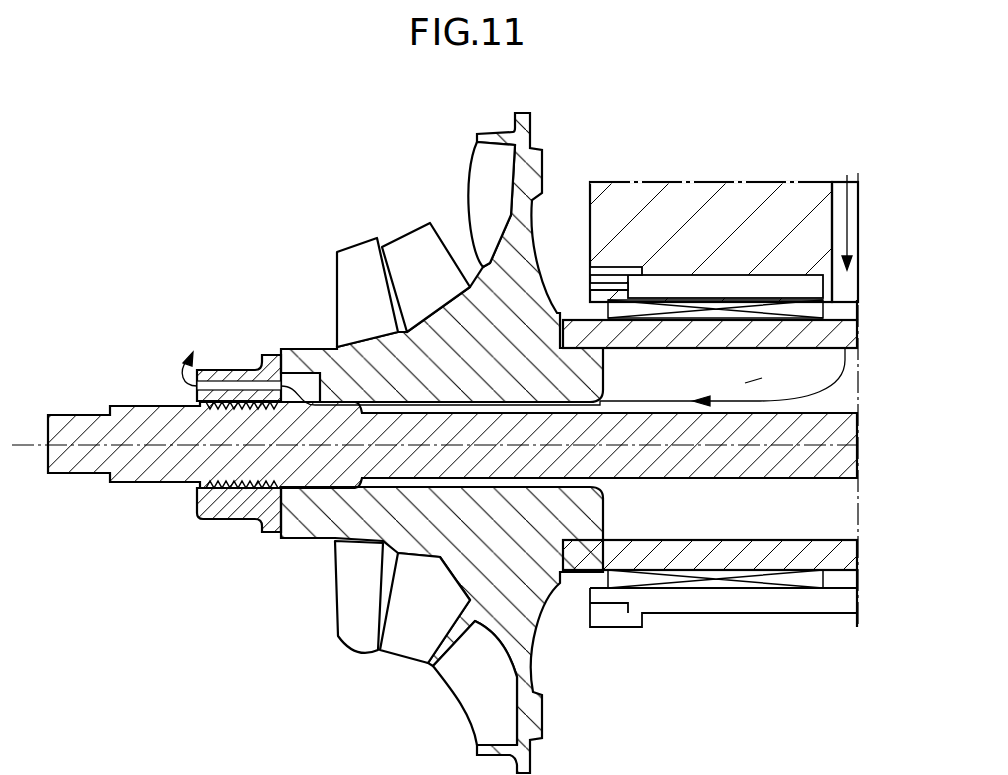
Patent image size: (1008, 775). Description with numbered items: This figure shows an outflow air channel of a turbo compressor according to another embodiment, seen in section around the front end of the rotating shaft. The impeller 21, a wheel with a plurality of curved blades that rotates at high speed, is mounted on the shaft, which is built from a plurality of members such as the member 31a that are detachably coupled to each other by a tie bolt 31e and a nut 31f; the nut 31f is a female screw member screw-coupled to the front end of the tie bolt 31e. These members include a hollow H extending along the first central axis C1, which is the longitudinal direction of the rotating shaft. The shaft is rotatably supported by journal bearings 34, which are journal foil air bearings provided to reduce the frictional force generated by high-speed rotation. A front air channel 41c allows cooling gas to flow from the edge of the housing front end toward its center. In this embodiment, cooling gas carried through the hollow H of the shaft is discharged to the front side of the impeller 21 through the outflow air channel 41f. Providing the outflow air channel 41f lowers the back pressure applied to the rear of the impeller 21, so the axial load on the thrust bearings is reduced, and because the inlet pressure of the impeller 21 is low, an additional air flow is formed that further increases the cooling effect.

The impeller 21 is at (470, 323).
The member 31a is at (655, 280).
The journal bearing 34 is at (737, 280).
The front air channel 41c is at (850, 245).
The nut 31f is at (220, 370).
The outflow air channel 41f is at (653, 401).
The first central axis C1 is at (27, 447).
The tie bolt 31e is at (83, 474).
The hollow H is at (757, 378).